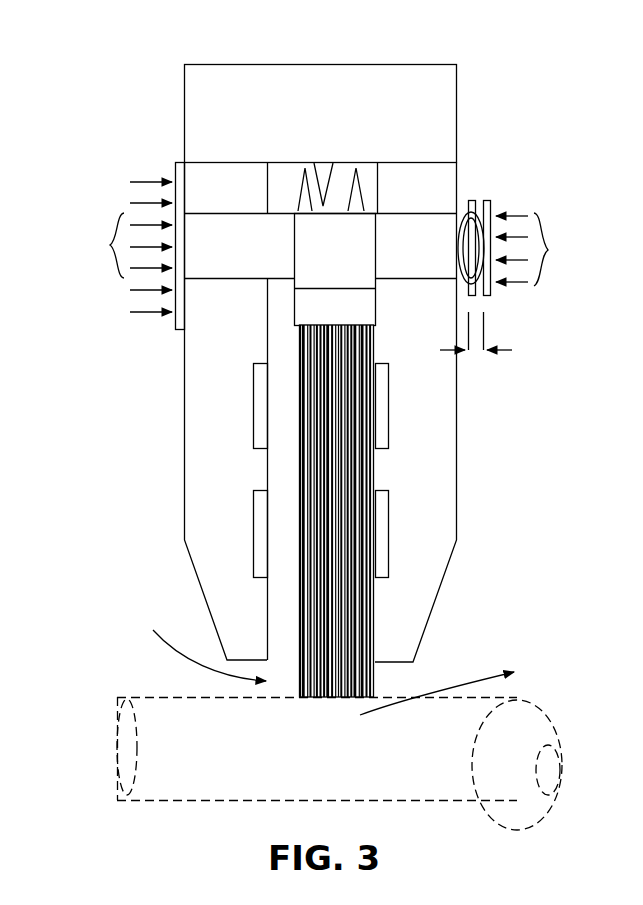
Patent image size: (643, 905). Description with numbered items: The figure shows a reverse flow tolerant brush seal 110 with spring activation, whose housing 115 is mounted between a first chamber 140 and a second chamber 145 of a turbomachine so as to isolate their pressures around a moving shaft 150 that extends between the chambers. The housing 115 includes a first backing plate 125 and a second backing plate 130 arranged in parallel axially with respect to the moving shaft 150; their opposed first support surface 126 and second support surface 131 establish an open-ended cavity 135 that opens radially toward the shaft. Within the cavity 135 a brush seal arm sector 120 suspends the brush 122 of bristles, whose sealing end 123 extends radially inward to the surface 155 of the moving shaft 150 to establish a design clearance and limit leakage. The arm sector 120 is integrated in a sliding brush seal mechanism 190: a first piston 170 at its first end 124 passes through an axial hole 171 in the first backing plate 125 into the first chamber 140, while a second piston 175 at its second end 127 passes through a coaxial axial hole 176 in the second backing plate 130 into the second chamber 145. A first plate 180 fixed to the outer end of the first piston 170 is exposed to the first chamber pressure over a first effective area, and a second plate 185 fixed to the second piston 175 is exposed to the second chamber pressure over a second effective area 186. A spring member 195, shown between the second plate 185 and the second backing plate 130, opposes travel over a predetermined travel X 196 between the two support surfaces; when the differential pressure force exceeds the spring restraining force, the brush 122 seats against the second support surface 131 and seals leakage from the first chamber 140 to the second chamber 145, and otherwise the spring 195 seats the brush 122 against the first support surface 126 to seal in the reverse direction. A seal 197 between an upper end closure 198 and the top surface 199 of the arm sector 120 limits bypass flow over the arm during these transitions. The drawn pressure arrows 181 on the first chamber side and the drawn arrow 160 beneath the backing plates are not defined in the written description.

The reverse flow tolerant brush seal 110 is at (340, 31).
The housing 115 is at (176, 124).
The brush seal arm sector 120 is at (371, 213).
The brush 122 is at (377, 622).
The sealing end 123 is at (414, 660).
The first end of the arm sector 124 is at (294, 240).
The first backing plate 125 is at (184, 500).
The first support surface 126 is at (265, 462).
The second end of the arm sector 127 is at (378, 258).
The second backing plate 130 is at (456, 408).
The second support surface 131 is at (378, 475).
The open-ended cavity 135 is at (280, 592).
The first chamber 140 is at (59, 340).
The second chamber 145 is at (612, 340).
The moving shaft 150 is at (518, 780).
The surface of the moving shaft 155 is at (377, 690).
The flow direction arrow 160 is at (172, 652).
The first piston 170 is at (280, 272).
The axial hole in the first backing plate 171 is at (207, 213).
The second piston 175 is at (427, 230).
The axial hole in the second backing plate 176 is at (403, 213).
The first plate 180 is at (175, 166).
The first effective area pressure arrows 181 is at (112, 247).
The second plate 185 is at (492, 208).
The second effective area 186 is at (547, 261).
The sliding brush seal mechanism 190 is at (331, 198).
The spring member 195 is at (466, 300).
The predetermined travel X 196 is at (490, 370).
The seal 197 is at (294, 185).
The upper end closure 198 is at (456, 98).
The top surface of the sector arm 199 is at (335, 213).